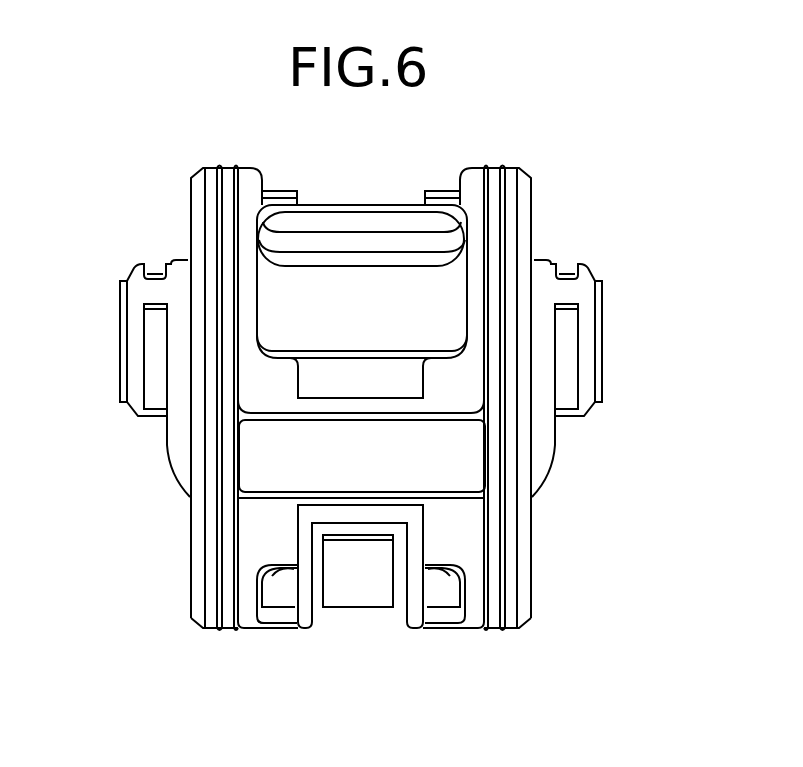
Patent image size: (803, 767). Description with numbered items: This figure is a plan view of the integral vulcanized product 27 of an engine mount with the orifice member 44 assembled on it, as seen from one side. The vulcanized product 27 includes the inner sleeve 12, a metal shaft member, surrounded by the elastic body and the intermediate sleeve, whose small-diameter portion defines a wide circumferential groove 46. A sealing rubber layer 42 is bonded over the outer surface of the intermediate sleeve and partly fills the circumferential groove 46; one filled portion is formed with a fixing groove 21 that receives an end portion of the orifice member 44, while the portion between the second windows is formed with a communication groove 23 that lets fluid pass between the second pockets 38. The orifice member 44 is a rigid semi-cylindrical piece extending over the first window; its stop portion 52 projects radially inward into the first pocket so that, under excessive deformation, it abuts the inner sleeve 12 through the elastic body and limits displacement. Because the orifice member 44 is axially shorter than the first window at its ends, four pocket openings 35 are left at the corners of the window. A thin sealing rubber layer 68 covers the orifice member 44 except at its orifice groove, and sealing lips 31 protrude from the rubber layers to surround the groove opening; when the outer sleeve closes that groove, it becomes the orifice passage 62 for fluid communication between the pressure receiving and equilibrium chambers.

The inner sleeve 12 is at (118, 317).
The fixing groove 21 is at (300, 536).
The communication groove 23 is at (358, 203).
The integral vulcanized product 27 is at (503, 147).
The sealing lips 31 is at (218, 190).
The pocket openings 35 is at (263, 573).
The second pockets 38 is at (262, 298).
The sealing rubber layer 42 is at (515, 597).
The orifice member 44 is at (373, 624).
The circumferential groove 46 is at (376, 534).
The stop portion 52 is at (352, 585).
The orifice passage 62 is at (430, 476).
The sealing rubber layer 68 is at (267, 624).